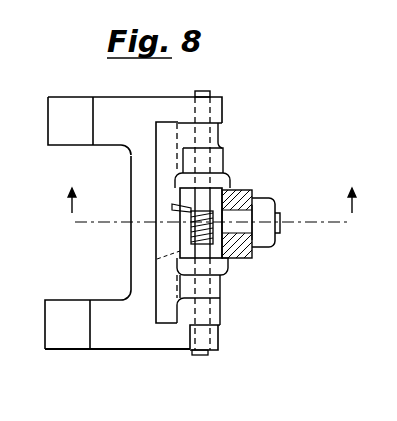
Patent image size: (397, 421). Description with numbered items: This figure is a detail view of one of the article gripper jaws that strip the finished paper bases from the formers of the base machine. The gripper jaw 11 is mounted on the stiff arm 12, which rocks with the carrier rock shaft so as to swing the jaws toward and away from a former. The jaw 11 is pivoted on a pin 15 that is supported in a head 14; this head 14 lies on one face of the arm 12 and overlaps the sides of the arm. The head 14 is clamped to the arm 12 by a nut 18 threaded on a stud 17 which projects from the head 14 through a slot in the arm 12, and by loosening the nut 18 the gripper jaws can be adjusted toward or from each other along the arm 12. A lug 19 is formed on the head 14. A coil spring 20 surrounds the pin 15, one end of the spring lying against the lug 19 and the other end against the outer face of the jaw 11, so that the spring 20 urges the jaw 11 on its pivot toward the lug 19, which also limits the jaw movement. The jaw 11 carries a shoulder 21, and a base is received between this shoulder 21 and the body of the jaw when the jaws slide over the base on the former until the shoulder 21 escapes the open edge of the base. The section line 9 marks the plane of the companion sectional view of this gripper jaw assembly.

The section line 9- 9 is at (212, 214).
The gripper jaw 11 is at (130, 283).
The arm 12 is at (243, 190).
The head 14 is at (222, 265).
The pin 15 is at (200, 356).
The stud 17 is at (280, 222).
The nut 18 is at (268, 238).
The lug 19 is at (165, 193).
The coil spring 20 is at (180, 230).
The shoulder 21 is at (93, 121).